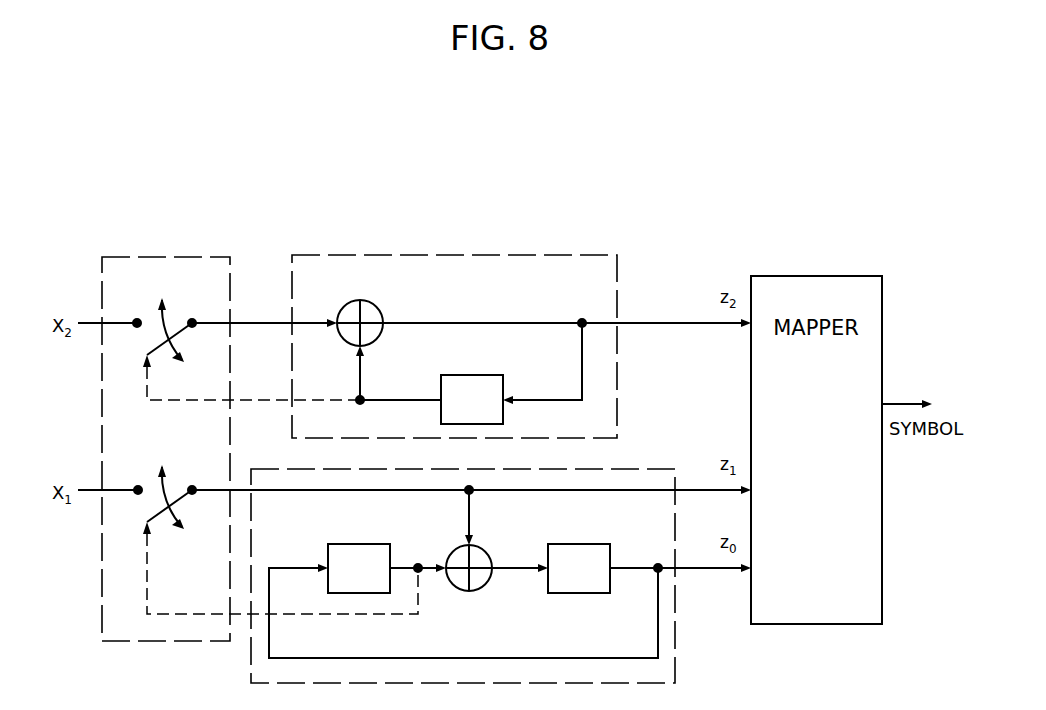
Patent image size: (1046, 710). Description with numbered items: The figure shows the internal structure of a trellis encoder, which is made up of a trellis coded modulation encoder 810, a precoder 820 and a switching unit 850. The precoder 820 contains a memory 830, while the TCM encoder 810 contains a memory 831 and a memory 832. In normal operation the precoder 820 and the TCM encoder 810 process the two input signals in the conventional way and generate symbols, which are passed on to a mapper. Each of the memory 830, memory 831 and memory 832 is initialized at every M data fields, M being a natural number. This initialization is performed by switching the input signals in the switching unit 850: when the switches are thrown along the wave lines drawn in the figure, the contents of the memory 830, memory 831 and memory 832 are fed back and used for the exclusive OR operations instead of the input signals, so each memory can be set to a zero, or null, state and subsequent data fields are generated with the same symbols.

The switching unit 850 is at (158, 256).
The precoder 820 is at (521, 332).
The memory of precoder 830 is at (487, 375).
The trellis coded modulation (TCM) encoder 810 is at (501, 561).
The memory of TCM encoder 831 is at (370, 544).
The memory of TCM encoder 832 is at (590, 544).